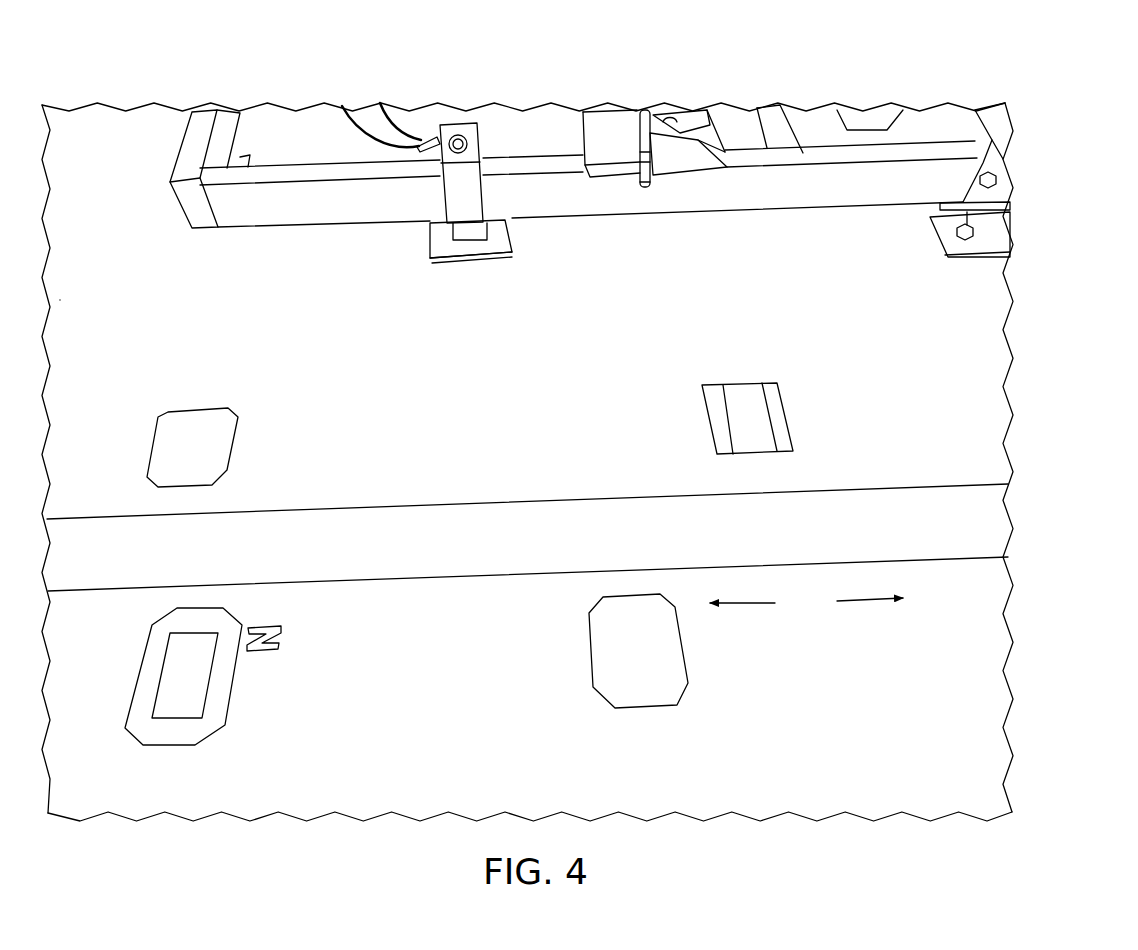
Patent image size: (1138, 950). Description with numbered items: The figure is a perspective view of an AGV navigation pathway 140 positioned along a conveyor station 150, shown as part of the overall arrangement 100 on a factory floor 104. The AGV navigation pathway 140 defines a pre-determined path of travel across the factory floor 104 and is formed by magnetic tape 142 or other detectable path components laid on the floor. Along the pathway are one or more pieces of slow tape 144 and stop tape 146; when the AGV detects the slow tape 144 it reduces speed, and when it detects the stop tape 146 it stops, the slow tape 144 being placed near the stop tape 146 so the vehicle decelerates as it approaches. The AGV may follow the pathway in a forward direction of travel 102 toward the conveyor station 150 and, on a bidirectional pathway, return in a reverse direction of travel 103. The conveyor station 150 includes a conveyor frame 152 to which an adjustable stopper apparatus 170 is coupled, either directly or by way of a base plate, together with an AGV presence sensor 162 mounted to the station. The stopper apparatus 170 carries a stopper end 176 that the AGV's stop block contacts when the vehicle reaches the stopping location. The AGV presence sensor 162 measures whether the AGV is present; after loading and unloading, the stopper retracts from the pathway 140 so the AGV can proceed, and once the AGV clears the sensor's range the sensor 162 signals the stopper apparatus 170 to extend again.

The vehicle body panel assembly 100 is at (586, 452).
The forward direction of travel 102 is at (865, 601).
The reverse direction of travel 103 is at (745, 603).
The factory floor 104 is at (213, 349).
The AGV navigation pathway 140 is at (406, 658).
The magnetic tape 142 is at (510, 520).
The slow tape 144 is at (200, 415).
The stop tape 146 is at (745, 397).
The conveyor station 150 is at (590, 146).
The conveyor frame 152 is at (232, 210).
The AGV presence sensor 162 is at (452, 133).
The adjustable stopper apparatus 170 is at (674, 96).
The stopper end 176 is at (644, 192).